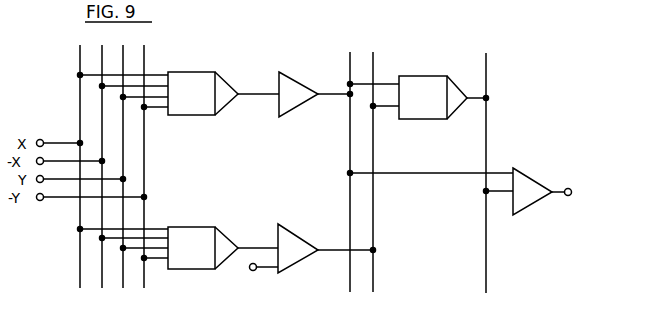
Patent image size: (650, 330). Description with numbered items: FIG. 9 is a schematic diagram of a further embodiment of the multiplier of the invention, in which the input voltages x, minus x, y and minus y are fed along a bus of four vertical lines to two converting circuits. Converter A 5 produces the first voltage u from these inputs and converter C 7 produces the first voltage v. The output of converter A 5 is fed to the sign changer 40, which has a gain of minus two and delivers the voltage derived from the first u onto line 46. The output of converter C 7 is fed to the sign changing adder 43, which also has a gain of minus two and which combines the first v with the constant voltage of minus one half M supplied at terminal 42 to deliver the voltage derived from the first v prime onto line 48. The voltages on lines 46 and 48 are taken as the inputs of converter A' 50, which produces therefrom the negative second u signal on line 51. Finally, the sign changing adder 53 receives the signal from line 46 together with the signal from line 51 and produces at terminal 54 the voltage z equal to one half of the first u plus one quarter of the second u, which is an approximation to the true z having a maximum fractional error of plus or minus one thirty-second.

The converter A 5 is at (203, 86).
The converter C 7 is at (203, 240).
The sign changer 40 is at (299, 88).
The terminal 42 is at (260, 279).
The sign changing adder 43 is at (298, 242).
The line 46 is at (346, 162).
The line 48 is at (375, 162).
The converter A' 50 is at (433, 88).
The line 51 is at (497, 173).
The sign changing adder 53 is at (532, 184).
The terminal 54 is at (576, 193).